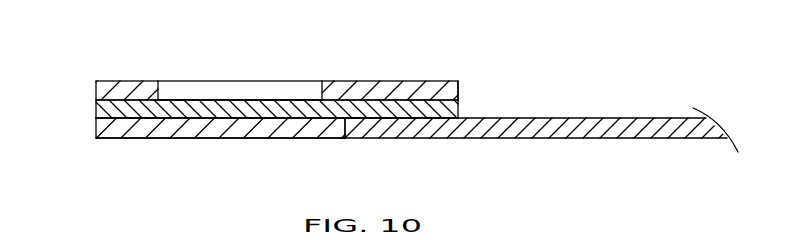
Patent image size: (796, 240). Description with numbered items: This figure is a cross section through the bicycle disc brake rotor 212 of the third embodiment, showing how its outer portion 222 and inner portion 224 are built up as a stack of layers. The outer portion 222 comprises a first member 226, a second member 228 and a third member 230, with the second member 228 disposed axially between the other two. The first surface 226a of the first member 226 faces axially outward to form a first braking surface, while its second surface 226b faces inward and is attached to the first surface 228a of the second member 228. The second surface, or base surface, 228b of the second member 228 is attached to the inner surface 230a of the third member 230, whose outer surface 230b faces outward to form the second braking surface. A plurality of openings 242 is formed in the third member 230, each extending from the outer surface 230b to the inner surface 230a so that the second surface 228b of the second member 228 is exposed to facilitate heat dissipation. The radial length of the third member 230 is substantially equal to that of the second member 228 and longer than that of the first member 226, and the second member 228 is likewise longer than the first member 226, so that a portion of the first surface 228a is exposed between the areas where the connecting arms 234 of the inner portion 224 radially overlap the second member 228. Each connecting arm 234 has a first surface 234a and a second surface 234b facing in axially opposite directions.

The bicycle disc brake rotor 212 is at (112, 48).
The outer portion 222 is at (137, 141).
The inner portion 224 is at (593, 112).
The first member 226 is at (95, 128).
The first surface of the first member 226a is at (200, 139).
The second surface of the first member 226b is at (381, 117).
The second member 228 is at (95, 108).
The first surface of the second member 228a is at (267, 119).
The second surface of the second member 228b is at (240, 99).
The third member 230 is at (95, 90).
The inner surface of the third member 230a is at (436, 99).
The outer surface of the third member 230b is at (346, 80).
The connecting arm 234 is at (572, 139).
The first surface of the connecting arm 234a is at (398, 139).
The second surface of the connecting arm 234b is at (532, 118).
The opening 242 is at (160, 94).